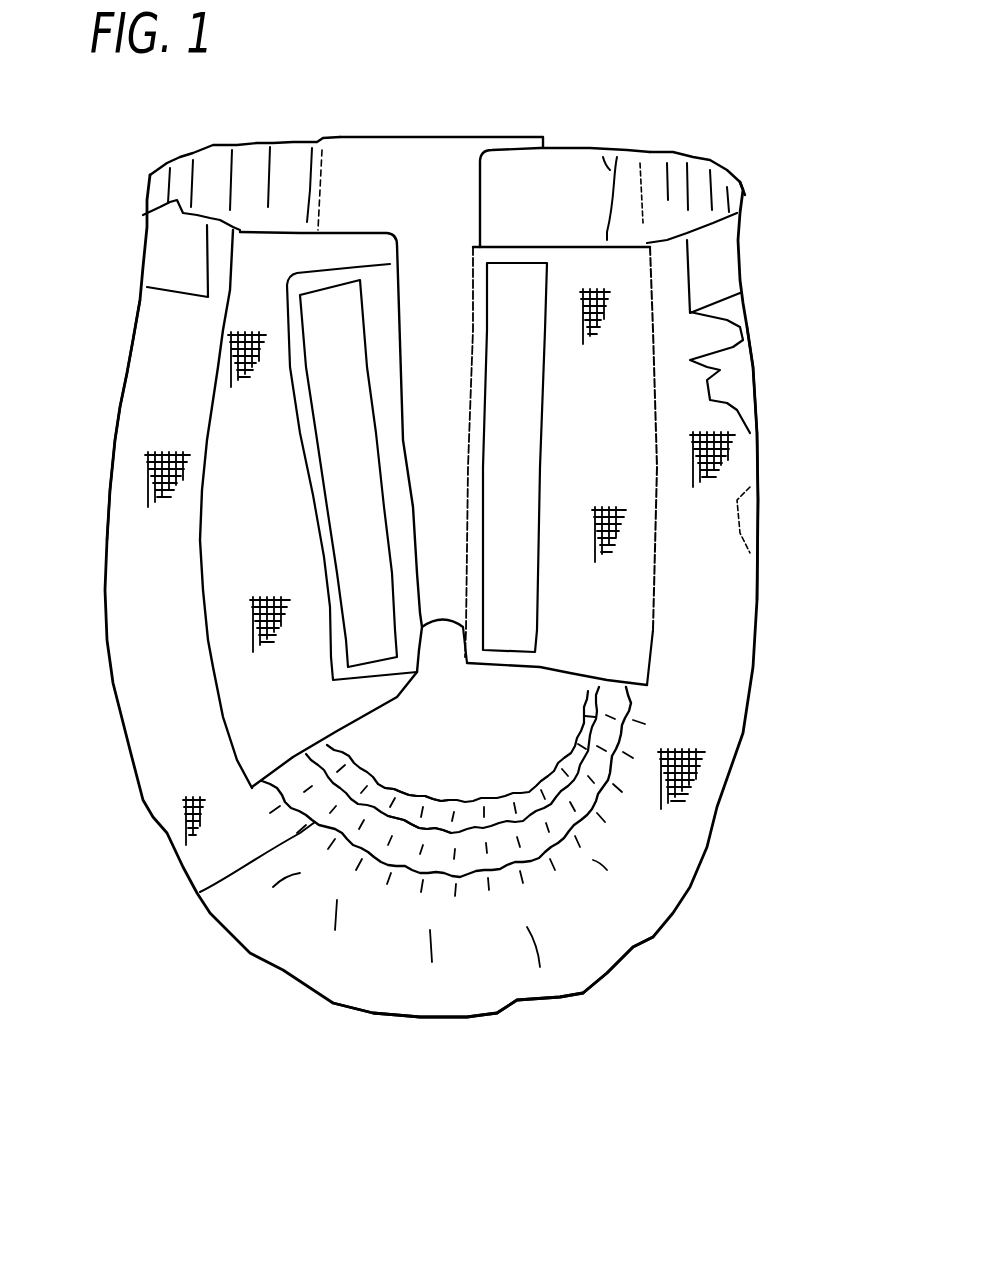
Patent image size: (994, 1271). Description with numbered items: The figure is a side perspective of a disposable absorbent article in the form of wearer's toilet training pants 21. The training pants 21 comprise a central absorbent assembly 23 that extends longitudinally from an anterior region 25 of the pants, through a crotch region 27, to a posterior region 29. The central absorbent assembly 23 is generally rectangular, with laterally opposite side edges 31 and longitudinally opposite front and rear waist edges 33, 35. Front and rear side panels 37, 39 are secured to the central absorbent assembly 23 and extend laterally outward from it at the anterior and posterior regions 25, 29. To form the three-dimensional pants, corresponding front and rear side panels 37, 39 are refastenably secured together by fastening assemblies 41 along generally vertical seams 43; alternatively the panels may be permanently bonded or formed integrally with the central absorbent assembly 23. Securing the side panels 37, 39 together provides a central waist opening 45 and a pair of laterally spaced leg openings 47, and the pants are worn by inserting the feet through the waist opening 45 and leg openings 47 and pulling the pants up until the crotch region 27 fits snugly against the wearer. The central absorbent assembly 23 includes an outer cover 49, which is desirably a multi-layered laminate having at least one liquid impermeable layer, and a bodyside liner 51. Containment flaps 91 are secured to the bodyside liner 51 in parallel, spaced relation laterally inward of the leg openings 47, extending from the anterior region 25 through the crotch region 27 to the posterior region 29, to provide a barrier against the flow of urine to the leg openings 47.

The training pants 21 is at (540, 98).
The central absorbent assembly 23 is at (233, 982).
The anterior region 25 is at (747, 457).
The crotch region 27 is at (477, 1017).
The posterior region 29 is at (125, 373).
The side edges 31 is at (200, 892).
The front waist edge 33 is at (740, 182).
The rear waist edge 35 is at (150, 175).
The front side panels 37 is at (575, 247).
The rear side panels 39 is at (280, 230).
The fastening assemblies 41 is at (500, 290).
The seams 43 is at (482, 154).
The waist opening 45 is at (177, 200).
The leg openings 47 is at (583, 685).
The outer cover 49 is at (621, 983).
The bodyside liner 51 is at (375, 778).
The containment flaps 91 is at (444, 815).